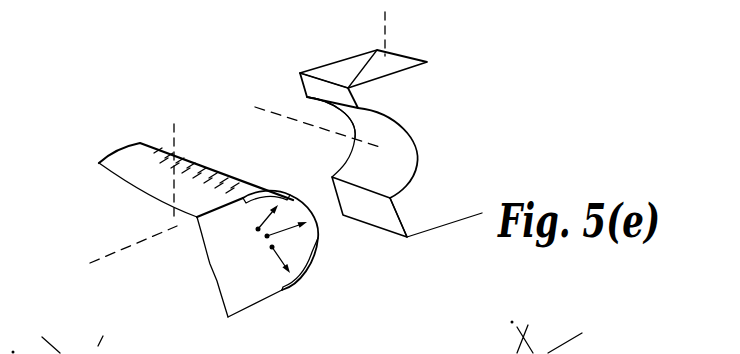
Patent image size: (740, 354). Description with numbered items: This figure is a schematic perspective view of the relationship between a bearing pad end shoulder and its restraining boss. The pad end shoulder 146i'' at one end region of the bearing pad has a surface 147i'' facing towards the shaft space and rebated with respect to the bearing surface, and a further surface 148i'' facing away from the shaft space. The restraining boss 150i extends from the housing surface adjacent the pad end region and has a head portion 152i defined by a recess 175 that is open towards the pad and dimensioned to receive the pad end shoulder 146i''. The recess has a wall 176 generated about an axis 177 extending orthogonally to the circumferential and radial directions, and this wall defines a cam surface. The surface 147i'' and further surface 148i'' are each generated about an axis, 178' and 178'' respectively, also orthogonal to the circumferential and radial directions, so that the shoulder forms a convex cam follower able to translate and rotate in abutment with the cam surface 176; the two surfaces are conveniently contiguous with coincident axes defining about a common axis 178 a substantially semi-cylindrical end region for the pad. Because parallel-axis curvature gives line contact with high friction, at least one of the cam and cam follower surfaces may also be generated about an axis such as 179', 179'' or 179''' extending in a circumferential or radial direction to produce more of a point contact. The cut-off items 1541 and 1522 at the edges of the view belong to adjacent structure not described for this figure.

The shoulder surface 147i'' is at (169, 199).
The pad end shoulder 146i'' is at (299, 263).
The further shoulder surface 148i'' is at (352, 272).
The common axis 178 is at (222, 279).
The axis of shoulder surface 178' is at (188, 263).
The axis of further shoulder surface 178'' is at (267, 300).
The additional generating axis 179' is at (114, 129).
The additional generating axis 179'' is at (129, 255).
The additional generating axis 179''' is at (435, 36).
The restraining boss 150i is at (441, 92).
The head portion 152i is at (302, 74).
The recess 175 is at (317, 110).
The recess wall 176 is at (399, 177).
The axis of recess wall 177 is at (312, 125).
The light guide 1541 is at (58, 330).
The light emitting element surface 1522 is at (520, 337).